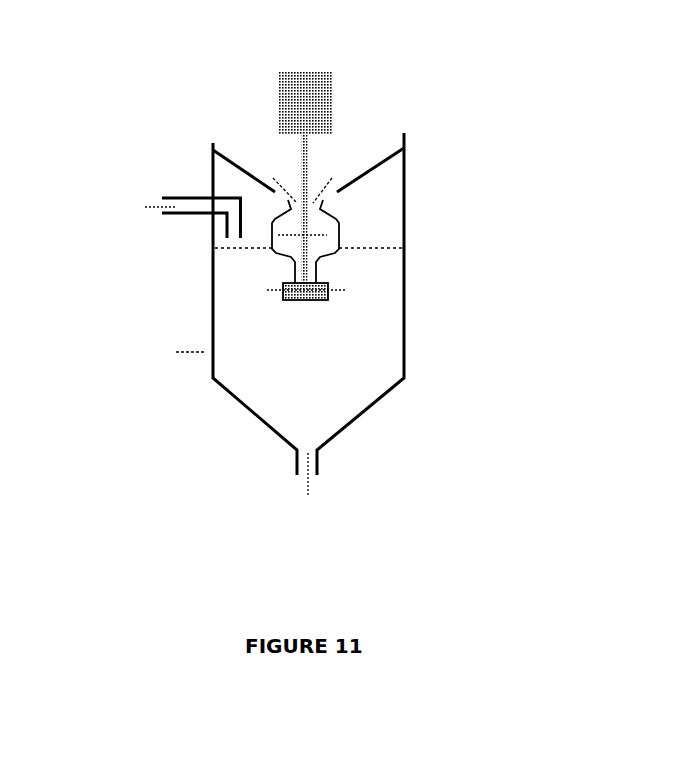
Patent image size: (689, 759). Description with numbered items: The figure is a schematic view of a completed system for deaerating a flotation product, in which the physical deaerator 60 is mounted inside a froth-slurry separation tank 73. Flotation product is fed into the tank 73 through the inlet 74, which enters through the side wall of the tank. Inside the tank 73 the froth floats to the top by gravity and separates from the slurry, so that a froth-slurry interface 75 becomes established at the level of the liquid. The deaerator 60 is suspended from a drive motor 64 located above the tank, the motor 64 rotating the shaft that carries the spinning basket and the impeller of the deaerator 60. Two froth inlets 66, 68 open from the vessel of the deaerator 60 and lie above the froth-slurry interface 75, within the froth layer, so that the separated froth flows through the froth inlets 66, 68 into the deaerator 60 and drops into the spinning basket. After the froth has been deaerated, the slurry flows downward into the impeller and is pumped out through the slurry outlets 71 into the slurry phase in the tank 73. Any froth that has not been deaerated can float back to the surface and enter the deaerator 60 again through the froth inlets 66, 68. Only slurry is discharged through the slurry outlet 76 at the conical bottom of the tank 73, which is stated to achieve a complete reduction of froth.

The physical deaerator 60 is at (343, 227).
The drive motor 64 is at (305, 90).
The froth inlet 66 is at (293, 183).
The froth inlet 68 is at (320, 177).
The slurry outlet 71 is at (282, 295).
The froth-slurry separation tank 73 is at (430, 305).
The inlet 74 is at (138, 208).
The froth-slurry interface 75 is at (415, 252).
The slurry outlet 76 is at (293, 488).